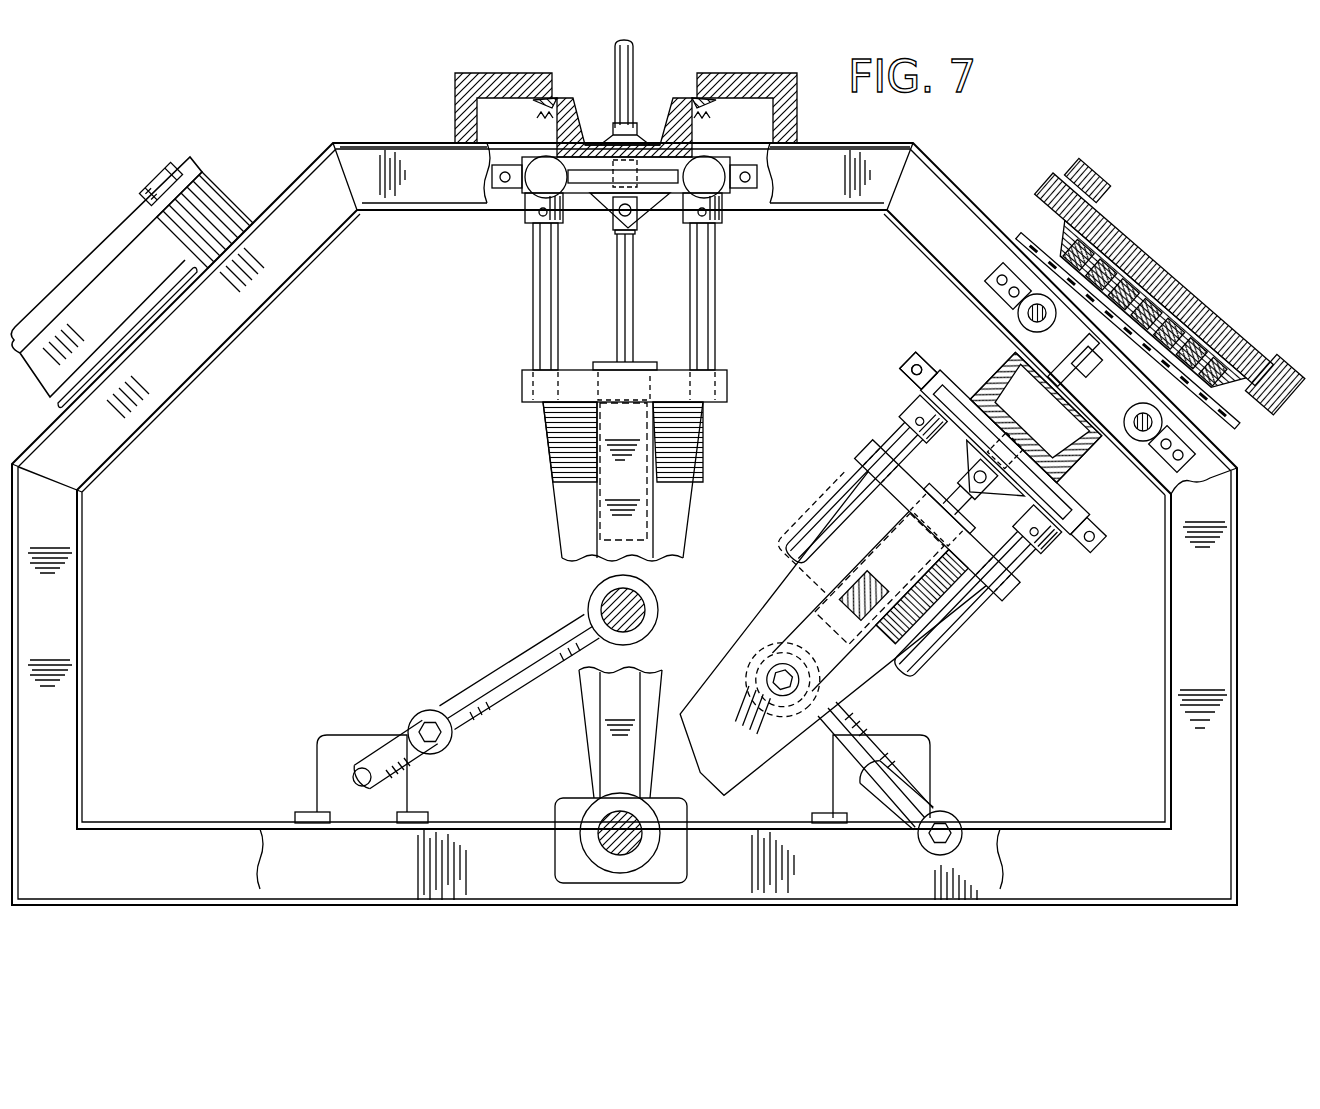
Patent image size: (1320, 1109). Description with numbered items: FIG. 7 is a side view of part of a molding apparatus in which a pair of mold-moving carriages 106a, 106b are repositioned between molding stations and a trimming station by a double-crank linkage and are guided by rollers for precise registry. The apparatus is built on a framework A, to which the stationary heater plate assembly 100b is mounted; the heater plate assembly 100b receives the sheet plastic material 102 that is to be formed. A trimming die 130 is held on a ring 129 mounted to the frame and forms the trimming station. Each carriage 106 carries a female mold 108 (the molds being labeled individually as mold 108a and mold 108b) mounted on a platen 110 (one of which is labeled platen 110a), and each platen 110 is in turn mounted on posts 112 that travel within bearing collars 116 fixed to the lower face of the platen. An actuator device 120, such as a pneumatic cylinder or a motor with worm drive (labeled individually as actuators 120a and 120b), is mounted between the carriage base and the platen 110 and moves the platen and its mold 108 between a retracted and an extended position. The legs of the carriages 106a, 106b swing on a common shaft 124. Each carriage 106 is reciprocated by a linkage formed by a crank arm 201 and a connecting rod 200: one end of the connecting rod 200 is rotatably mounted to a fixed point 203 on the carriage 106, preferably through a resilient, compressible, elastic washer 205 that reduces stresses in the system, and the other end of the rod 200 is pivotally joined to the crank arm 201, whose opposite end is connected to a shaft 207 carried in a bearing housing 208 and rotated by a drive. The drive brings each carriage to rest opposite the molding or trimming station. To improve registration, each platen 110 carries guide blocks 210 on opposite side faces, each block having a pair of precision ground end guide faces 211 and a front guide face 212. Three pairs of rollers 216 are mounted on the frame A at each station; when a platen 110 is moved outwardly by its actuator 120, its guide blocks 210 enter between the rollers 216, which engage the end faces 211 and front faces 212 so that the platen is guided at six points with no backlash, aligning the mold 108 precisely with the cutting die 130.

The framework A is at (289, 289).
The stationary heater plate assembly 100b is at (92, 302).
The sheet plastic material 102 is at (130, 330).
The carriage 106 is at (535, 493).
The mold-moving carriage 106a is at (560, 447).
The mold-moving carriage 106b is at (862, 665).
The female mold 108 is at (978, 362).
The cup member 108a is at (690, 136).
The cup member 108b is at (1005, 375).
The platen 110 is at (1078, 528).
The bar 110a is at (730, 183).
The posts 112 is at (705, 284).
The bearing collars 116 is at (905, 410).
The actuator device 120 is at (668, 364).
The block 120a is at (613, 362).
The block 120b is at (830, 498).
The shaft 124 is at (636, 840).
The ring 129 is at (712, 74).
The trimming die 130 is at (533, 112).
The connecting rod 200 is at (512, 662).
The crank arm 201 is at (400, 742).
The fixed point 203 is at (645, 607).
The elastic washer 205 is at (636, 620).
The shaft 207 is at (356, 776).
The bearing housing 208 is at (407, 802).
The guide block 210 is at (664, 200).
The end guide faces 211 is at (570, 172).
The front guide face 212 is at (592, 180).
The rollers 216 is at (522, 173).